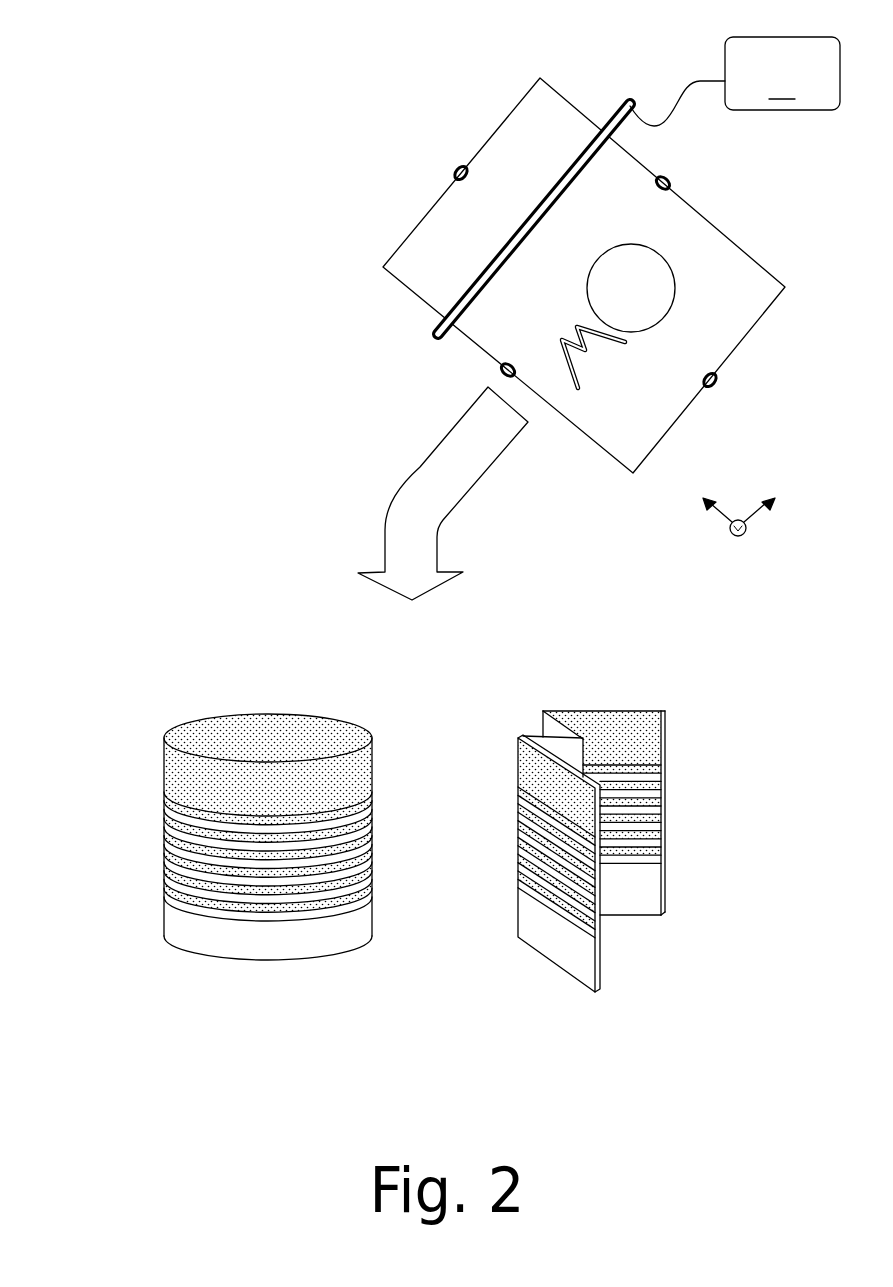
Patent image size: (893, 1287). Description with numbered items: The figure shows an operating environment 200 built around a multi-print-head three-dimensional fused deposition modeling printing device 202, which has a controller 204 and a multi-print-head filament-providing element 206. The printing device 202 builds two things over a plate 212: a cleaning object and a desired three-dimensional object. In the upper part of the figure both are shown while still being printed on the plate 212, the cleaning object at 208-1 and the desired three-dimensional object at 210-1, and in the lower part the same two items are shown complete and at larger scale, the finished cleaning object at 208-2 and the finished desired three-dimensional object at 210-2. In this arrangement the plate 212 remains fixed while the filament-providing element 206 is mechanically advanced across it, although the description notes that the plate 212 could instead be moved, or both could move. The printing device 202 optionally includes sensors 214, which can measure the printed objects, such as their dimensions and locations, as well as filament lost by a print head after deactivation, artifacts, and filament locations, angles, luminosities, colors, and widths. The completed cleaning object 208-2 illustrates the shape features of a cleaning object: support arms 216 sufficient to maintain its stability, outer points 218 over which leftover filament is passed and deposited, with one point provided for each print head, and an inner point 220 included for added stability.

The operating environment 200 is at (139, 49).
The multi-print-head 3D FDM printing device 202 is at (322, 292).
The controller 204 is at (735, 81).
The multi-print-head filament-providing element 206 is at (436, 337).
The cleaning object being printed 208-1 is at (587, 410).
The completed cleaning object 208-2 is at (604, 851).
The desired 3D object being printed 210-1 is at (690, 326).
The completed desired 3D object 210-2 is at (385, 1003).
The plate 212 is at (543, 93).
The sensors 214 is at (453, 168).
The support arms 216 is at (646, 851).
The outer points 218 is at (514, 759).
The inner point 220 is at (681, 730).